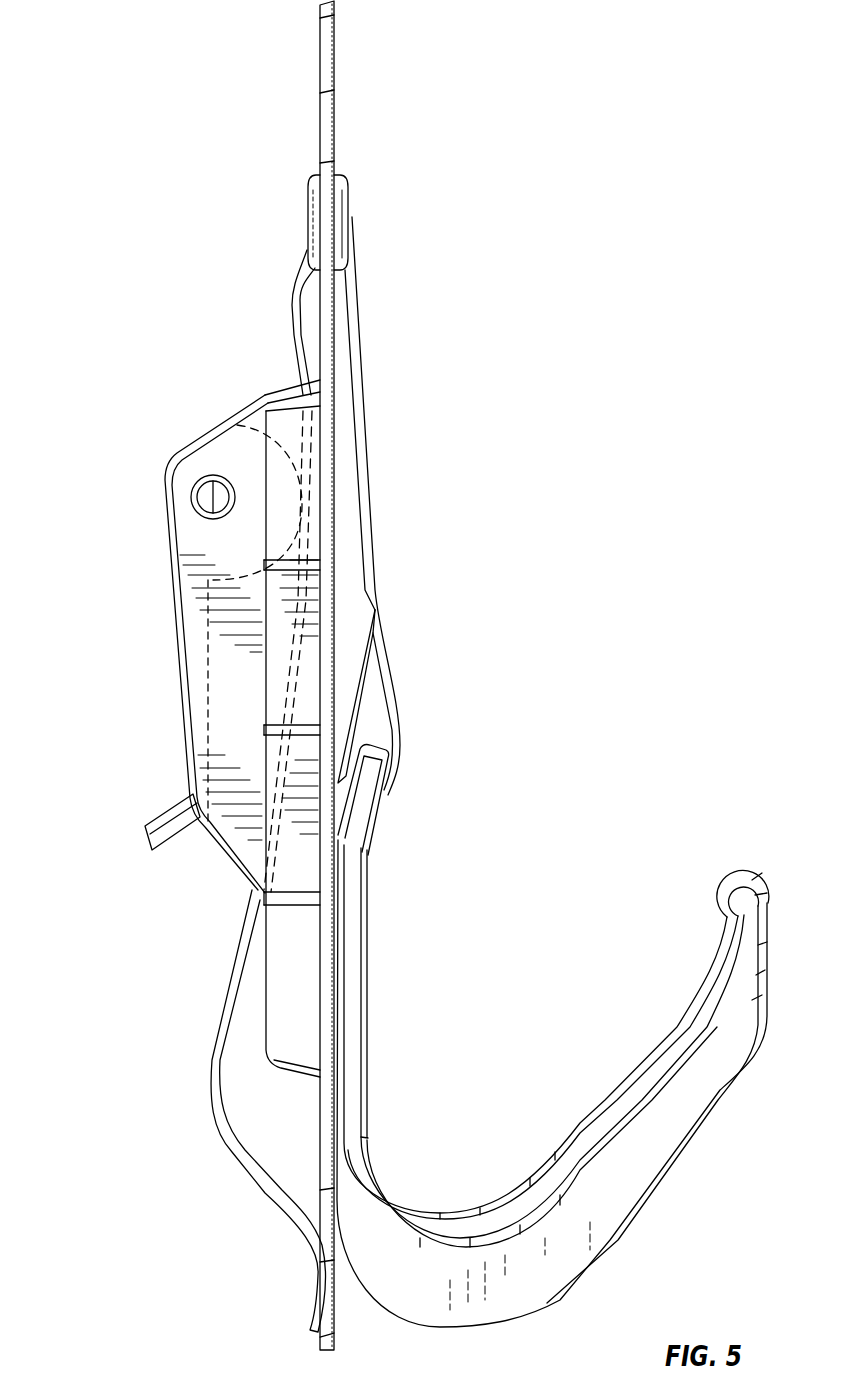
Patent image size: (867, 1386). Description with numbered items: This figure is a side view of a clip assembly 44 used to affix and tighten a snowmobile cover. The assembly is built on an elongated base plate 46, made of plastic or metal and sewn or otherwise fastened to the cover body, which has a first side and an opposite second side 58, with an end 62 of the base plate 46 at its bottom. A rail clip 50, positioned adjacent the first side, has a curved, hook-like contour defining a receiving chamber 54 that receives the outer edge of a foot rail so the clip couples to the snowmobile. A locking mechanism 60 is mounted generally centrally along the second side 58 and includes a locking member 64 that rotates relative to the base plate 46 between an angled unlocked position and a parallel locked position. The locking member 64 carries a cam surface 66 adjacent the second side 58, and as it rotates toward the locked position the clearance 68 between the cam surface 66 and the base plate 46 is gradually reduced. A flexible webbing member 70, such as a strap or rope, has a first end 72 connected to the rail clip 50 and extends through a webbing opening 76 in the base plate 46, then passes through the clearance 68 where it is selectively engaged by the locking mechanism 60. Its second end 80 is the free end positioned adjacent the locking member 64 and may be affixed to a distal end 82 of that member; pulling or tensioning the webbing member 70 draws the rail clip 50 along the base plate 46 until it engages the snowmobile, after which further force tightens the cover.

The clip assembly 44 is at (628, 326).
The base plate 46 is at (327, 140).
The rail clip 50 is at (565, 1230).
The receiving chamber 54 is at (580, 937).
The second side of the base plate 58 is at (320, 83).
The locking mechanism 60 is at (166, 668).
The end of the base plate 62 is at (335, 1320).
The locking member 64 is at (195, 530).
The cam surface 66 is at (312, 440).
The clearance 68 is at (312, 500).
The webbing member 70 is at (356, 300).
The first end of the webbing member 72 is at (388, 666).
The webbing opening 76 is at (348, 212).
The second end of the webbing member 80 is at (313, 1296).
The distal end of the locking member 82 is at (150, 843).